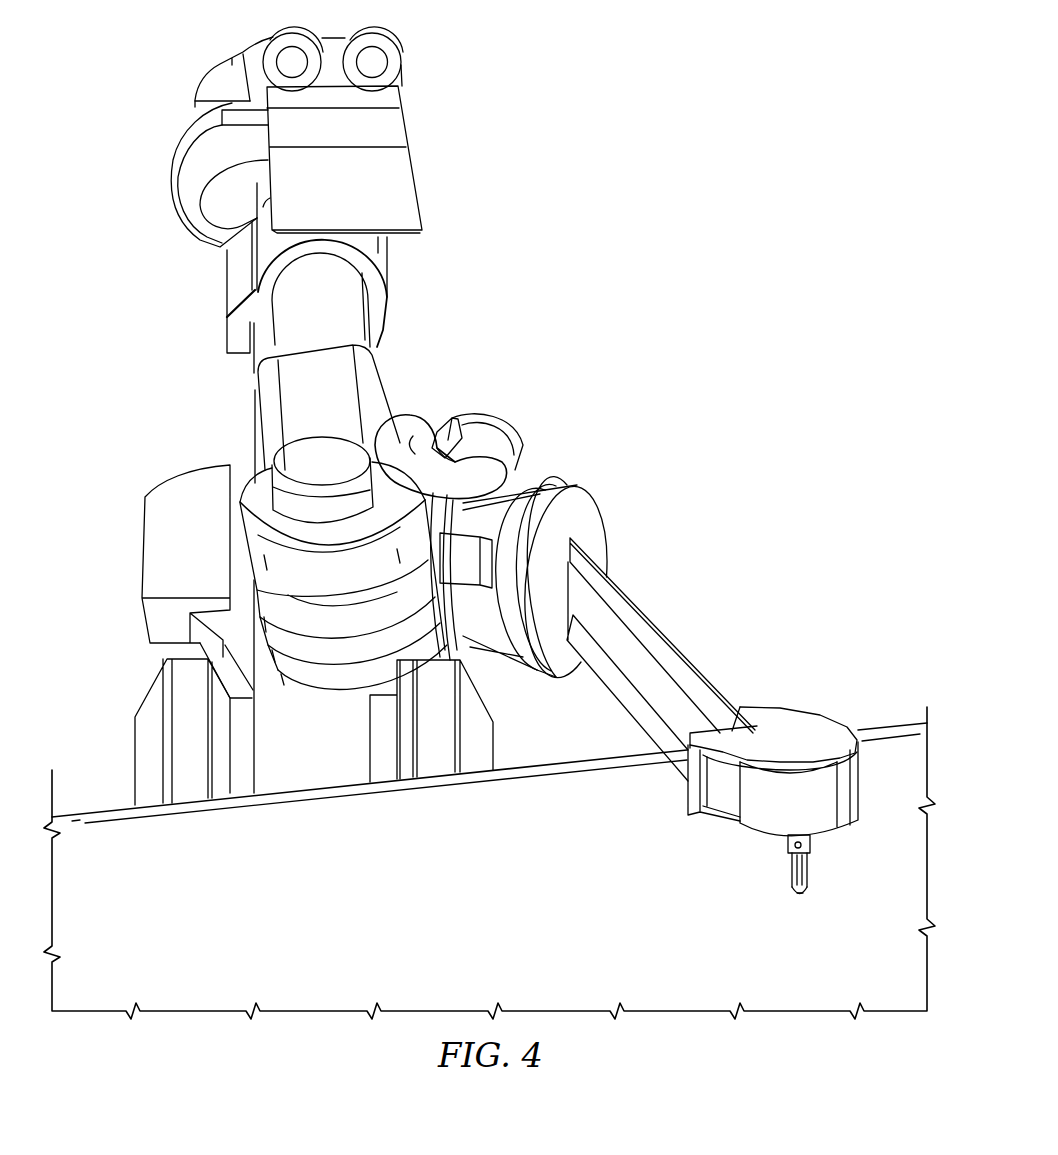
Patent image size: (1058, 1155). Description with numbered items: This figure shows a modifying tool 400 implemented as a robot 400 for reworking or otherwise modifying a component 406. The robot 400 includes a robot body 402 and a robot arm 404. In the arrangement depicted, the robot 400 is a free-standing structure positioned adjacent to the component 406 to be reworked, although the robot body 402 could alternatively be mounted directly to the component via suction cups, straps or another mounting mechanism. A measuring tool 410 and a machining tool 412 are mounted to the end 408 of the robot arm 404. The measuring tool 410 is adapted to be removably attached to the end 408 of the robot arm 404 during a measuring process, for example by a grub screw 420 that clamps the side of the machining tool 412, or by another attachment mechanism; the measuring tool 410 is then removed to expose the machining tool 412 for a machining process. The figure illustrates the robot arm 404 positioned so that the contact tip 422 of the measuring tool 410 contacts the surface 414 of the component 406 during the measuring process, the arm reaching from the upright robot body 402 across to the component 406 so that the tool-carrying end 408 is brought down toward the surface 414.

The modifying tool 400 is at (651, 217).
The robot body 402 is at (212, 65).
The robot arm 404 is at (525, 488).
The component 406 is at (513, 900).
The end of robot arm 408 is at (818, 710).
The measuring tool 410 is at (808, 867).
The machining tool 412 is at (792, 877).
The surface 414 is at (95, 812).
The grub screw 420 is at (788, 843).
The contact tip 422 is at (799, 898).